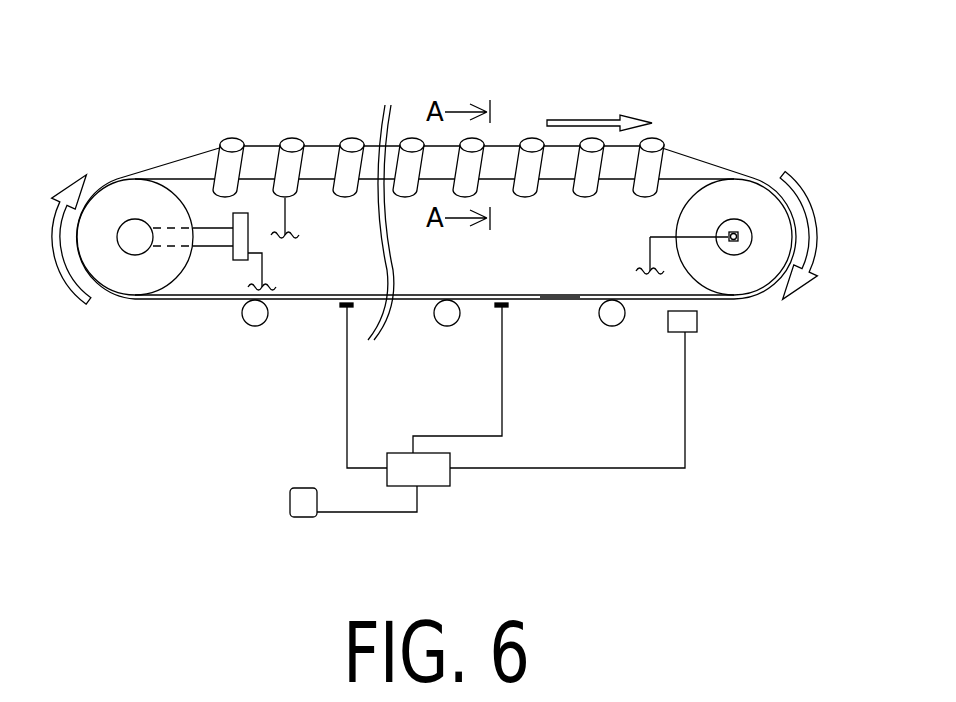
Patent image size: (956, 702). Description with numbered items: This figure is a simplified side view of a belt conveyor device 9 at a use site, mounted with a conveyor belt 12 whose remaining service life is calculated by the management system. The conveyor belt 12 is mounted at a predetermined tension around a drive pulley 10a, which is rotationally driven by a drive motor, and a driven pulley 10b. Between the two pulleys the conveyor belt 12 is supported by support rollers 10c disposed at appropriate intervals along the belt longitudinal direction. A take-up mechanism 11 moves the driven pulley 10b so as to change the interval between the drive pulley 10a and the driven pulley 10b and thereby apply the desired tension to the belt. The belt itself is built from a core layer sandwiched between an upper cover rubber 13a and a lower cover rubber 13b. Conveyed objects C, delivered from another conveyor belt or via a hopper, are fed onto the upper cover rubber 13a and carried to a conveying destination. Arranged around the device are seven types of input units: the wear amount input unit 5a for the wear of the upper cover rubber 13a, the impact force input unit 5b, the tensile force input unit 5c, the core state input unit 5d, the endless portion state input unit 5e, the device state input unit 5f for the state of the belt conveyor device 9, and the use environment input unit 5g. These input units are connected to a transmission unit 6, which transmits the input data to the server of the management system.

The belt conveyor device 9 is at (163, 116).
The conveyed objects C is at (260, 138).
The conveyor belt 12 is at (704, 136).
The drive pulley 10a is at (737, 202).
The driven pulley 10b is at (121, 192).
The support rollers 10c is at (533, 143).
The take-up mechanism 11 is at (213, 243).
The wear amount input unit 5a is at (342, 307).
The impact force input unit 5b is at (289, 200).
The tensile force input unit 5c is at (240, 238).
The core state input unit 5d is at (687, 326).
The endless portion state input unit 5e is at (498, 308).
The device state input unit 5f is at (734, 241).
The use environment input unit 5g is at (295, 500).
The transmission unit 6 is at (437, 482).
The upper cover rubber 13a is at (557, 305).
The lower cover rubber 13b is at (660, 249).